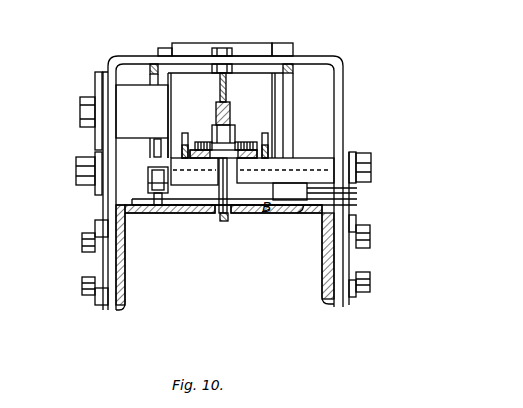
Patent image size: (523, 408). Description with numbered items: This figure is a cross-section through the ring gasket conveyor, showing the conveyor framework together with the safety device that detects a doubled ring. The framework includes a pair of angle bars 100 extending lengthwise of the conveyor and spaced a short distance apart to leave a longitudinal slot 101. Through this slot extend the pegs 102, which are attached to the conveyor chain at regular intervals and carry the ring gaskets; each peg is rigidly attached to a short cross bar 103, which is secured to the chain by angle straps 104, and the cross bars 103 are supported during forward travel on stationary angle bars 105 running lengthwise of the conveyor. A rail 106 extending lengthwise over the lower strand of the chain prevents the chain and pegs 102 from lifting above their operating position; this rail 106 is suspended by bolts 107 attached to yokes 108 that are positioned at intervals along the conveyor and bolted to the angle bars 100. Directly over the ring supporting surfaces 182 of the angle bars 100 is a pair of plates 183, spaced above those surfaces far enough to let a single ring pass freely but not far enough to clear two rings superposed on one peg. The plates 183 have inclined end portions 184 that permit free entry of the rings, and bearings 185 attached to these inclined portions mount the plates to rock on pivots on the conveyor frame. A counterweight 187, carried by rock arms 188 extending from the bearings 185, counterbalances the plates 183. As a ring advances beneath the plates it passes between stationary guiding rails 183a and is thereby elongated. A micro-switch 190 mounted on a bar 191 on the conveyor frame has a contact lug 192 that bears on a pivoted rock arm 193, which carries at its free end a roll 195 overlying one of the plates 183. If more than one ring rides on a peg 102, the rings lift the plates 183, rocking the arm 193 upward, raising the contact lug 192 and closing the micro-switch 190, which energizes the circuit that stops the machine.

The angle bars 100 is at (122, 258).
The longitudinal slot 101 is at (213, 221).
The pegs 102 is at (225, 216).
The cross bar 103 is at (233, 152).
The angle straps 104 is at (205, 142).
The stationary angle bars 105 is at (268, 140).
The rail 106 is at (230, 108).
The bolts 107 is at (220, 90).
The yokes 108 is at (340, 82).
The ring supporting surfaces 182 is at (302, 208).
The plates 183 is at (283, 190).
The stationary guiding rails 183a is at (310, 202).
The inclined end portions 184 is at (300, 191).
The bearings 185 is at (312, 166).
The counterweight 187 is at (200, 46).
The rock arms 188 is at (283, 50).
The micro-switch 190 is at (160, 110).
The bar 191 is at (100, 82).
The contact lug 192 is at (156, 158).
The rock arm 193 is at (148, 186).
The roll 195 is at (157, 196).